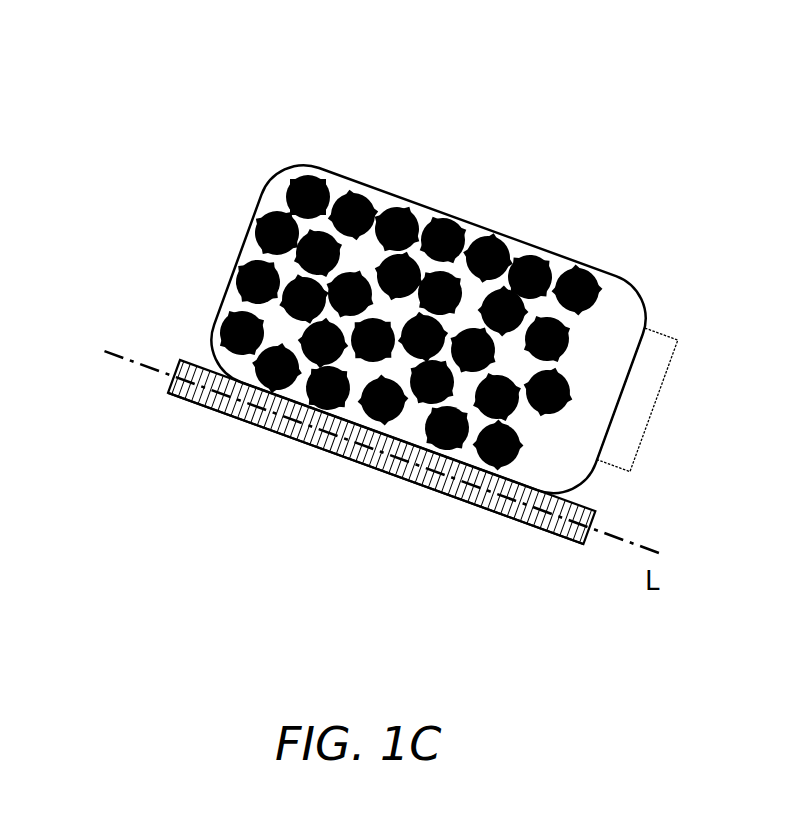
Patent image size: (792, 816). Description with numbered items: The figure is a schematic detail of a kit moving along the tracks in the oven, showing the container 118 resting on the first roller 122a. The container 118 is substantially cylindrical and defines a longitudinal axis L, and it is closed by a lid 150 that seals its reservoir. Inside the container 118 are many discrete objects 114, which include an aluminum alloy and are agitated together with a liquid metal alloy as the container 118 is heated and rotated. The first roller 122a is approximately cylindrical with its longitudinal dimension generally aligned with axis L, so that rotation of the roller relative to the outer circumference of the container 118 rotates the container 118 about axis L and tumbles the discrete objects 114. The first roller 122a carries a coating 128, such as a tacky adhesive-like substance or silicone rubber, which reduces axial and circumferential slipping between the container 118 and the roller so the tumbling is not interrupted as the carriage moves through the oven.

The discrete object 114 is at (373, 195).
The container 118 is at (634, 280).
The lid 150 is at (667, 335).
The first roller 122a is at (322, 456).
The coating 128 is at (513, 503).